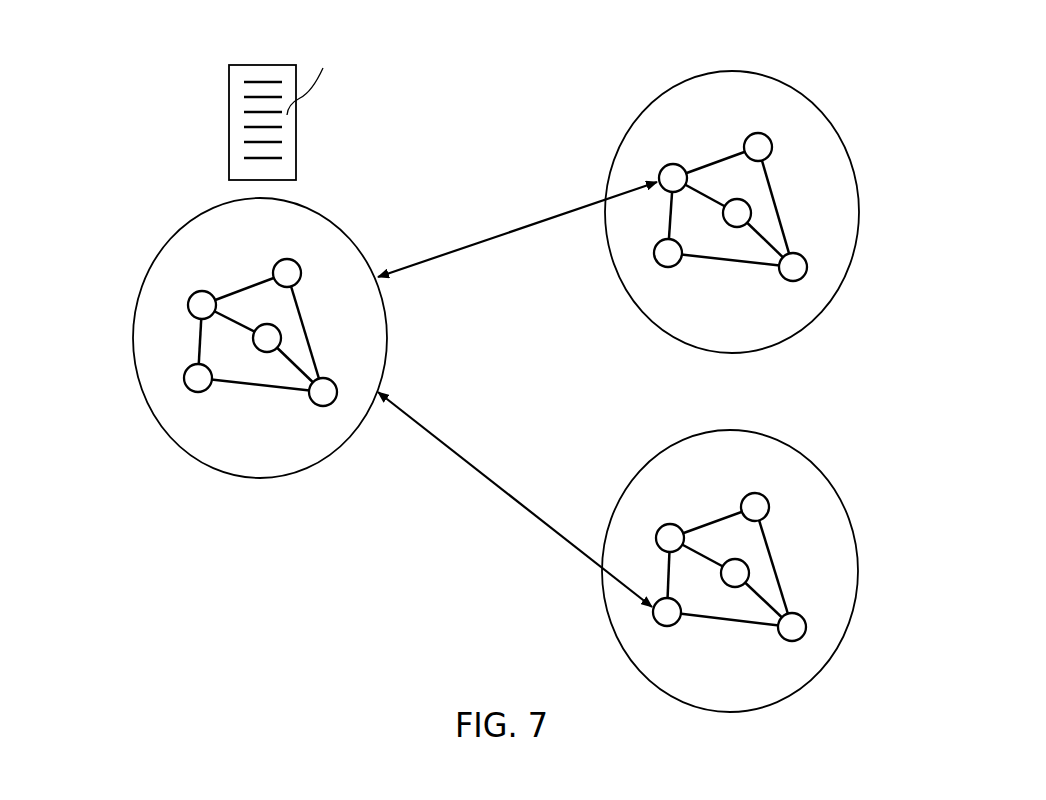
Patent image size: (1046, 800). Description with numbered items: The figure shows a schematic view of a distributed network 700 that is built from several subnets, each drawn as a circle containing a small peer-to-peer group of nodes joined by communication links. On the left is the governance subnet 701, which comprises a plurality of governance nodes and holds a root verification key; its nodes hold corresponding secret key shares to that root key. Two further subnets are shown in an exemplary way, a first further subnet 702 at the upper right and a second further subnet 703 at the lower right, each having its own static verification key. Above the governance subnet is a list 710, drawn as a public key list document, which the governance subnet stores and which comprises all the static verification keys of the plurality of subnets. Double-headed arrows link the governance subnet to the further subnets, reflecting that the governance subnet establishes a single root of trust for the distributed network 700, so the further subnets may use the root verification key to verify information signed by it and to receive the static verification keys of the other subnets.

The distributed network 700 is at (340, 689).
The governance subnet 701 is at (158, 323).
The subnet SNA 702 is at (647, 120).
The subnet SNB 703 is at (622, 605).
The list 710 is at (240, 122).